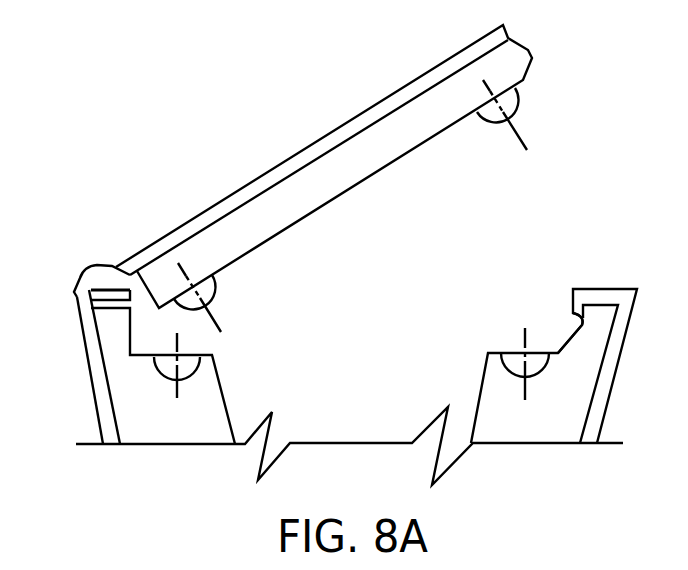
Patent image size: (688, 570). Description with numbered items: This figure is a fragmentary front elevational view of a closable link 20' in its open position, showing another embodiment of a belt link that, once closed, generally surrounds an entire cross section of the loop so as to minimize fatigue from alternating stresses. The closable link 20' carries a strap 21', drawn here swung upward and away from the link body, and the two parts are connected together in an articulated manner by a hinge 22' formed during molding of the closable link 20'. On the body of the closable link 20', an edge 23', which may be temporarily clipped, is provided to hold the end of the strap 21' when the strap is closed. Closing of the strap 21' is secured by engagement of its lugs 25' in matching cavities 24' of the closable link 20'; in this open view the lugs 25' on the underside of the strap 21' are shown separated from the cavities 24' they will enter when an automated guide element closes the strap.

The closable link 20' is at (356, 387).
The strap 21' is at (324, 166).
The hinge 22' is at (80, 265).
The edge 23' is at (545, 306).
The cavities 24' is at (351, 350).
The lugs 25' is at (350, 206).